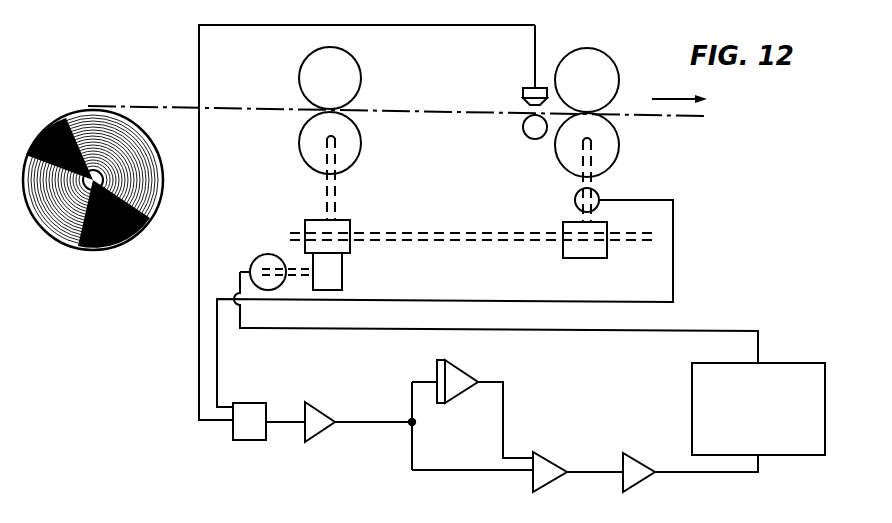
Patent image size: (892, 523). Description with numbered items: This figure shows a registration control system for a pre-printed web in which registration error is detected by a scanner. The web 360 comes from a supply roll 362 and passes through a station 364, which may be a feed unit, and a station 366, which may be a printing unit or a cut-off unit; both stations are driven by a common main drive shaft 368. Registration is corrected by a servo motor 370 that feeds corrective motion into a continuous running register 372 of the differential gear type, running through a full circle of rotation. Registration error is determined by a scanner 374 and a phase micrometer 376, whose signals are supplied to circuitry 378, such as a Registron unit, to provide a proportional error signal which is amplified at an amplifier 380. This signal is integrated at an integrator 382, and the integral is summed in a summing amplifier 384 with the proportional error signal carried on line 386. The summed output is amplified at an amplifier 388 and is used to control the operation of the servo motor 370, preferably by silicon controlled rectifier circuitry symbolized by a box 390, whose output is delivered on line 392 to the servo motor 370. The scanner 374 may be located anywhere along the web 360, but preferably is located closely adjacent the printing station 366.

The web 360 is at (176, 96).
The supply roll 362 is at (121, 247).
The station 364 is at (362, 73).
The station 366 is at (620, 76).
The main drive shaft 368 is at (455, 232).
The servo motor 370 is at (262, 255).
The continuous running register 372 is at (343, 270).
The scanner 374 is at (525, 90).
The phase micrometer 376 is at (600, 196).
The circuitry 378 is at (252, 403).
The amplifier 380 is at (318, 410).
The integrator 382 is at (456, 368).
The summing amplifier 384 is at (548, 458).
The line 386 is at (460, 474).
The amplifier 388 is at (645, 446).
The box 390 is at (822, 363).
The line 392 is at (604, 332).